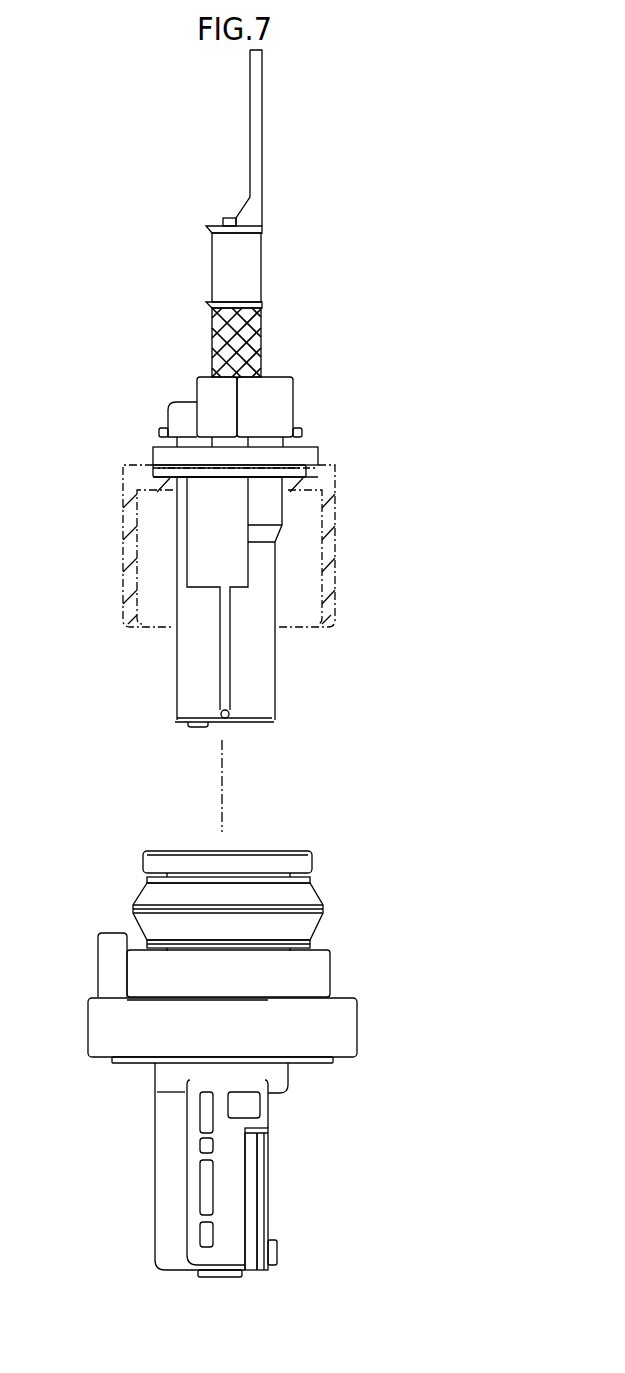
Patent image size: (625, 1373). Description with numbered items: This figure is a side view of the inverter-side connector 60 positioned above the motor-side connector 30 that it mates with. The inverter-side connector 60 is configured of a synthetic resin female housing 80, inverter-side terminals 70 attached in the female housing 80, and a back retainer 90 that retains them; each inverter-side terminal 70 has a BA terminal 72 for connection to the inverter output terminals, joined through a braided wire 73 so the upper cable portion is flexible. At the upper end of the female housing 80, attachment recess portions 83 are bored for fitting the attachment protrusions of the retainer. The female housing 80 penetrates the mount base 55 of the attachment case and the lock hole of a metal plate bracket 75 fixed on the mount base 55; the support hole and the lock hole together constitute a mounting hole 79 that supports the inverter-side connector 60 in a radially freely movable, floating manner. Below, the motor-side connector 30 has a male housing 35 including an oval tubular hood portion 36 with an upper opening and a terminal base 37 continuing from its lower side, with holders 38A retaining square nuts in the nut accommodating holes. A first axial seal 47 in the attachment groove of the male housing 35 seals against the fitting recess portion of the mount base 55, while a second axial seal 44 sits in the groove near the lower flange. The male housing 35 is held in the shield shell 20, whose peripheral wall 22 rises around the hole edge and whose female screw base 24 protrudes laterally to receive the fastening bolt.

The inverter-side connector 60 is at (128, 325).
The BA terminal 72 is at (262, 155).
The inverter-side terminal 70 is at (263, 277).
The braided wire 73 is at (261, 337).
The back retainer 90 is at (197, 392).
The bracket 75 is at (312, 447).
The mounting hole 79 is at (172, 463).
The attachment recess portion 83 is at (303, 470).
The mount base 55 is at (124, 545).
The female housing 80 is at (272, 686).
The motor-side connector 30 is at (133, 1115).
The hood portion 36 is at (312, 863).
The first axial seal 47 is at (323, 927).
The peripheral wall 22 is at (330, 973).
The female screw base 24 is at (112, 933).
The shield shell 20 is at (357, 1025).
The second axial seal 44 is at (130, 1062).
The male housing 35 is at (288, 1072).
The holder 38A is at (268, 1158).
The terminal base 37 is at (245, 1193).